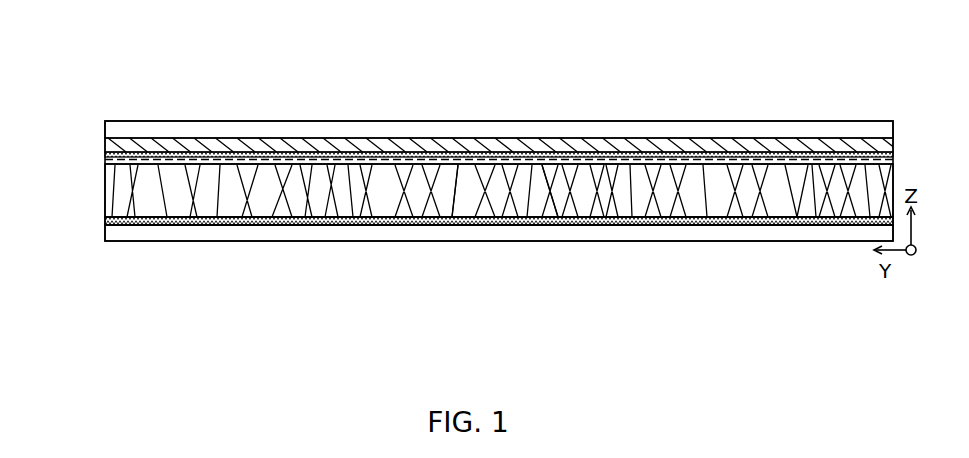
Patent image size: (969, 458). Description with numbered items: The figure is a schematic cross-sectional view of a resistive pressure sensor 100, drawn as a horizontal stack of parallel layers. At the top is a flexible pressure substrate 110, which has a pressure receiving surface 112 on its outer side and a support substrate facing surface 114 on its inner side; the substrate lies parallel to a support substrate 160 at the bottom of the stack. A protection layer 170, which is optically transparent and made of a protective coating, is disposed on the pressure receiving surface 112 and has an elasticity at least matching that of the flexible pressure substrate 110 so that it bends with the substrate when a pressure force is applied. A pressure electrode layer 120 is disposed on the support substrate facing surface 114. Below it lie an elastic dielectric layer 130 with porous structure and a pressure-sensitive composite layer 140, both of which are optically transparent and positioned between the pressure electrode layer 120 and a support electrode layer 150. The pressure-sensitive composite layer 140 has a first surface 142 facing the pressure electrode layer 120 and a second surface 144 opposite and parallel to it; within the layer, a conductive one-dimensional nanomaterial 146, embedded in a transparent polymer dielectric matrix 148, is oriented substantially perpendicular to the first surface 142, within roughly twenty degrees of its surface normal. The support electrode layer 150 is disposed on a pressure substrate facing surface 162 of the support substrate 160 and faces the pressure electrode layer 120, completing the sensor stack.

The resistive pressure sensor 100 is at (143, 66).
The flexible pressure substrate 110 is at (160, 138).
The pressure receiving surface 112 is at (218, 138).
The support substrate facing surface 114 is at (283, 157).
The pressure electrode layer 120 is at (105, 157).
The elastic dielectric layer 130 is at (482, 157).
The pressure-sensitive composite layer 140 is at (105, 192).
The first surface 142 is at (385, 163).
The second surface 144 is at (385, 220).
The conductive one-dimensional nanomaterial 146 is at (455, 193).
The transparent polymer dielectric matrix 148 is at (537, 192).
The support electrode layer 150 is at (280, 225).
The support substrate 160 is at (643, 230).
The pressure substrate facing surface 162 is at (707, 224).
The protection layer 170 is at (680, 128).